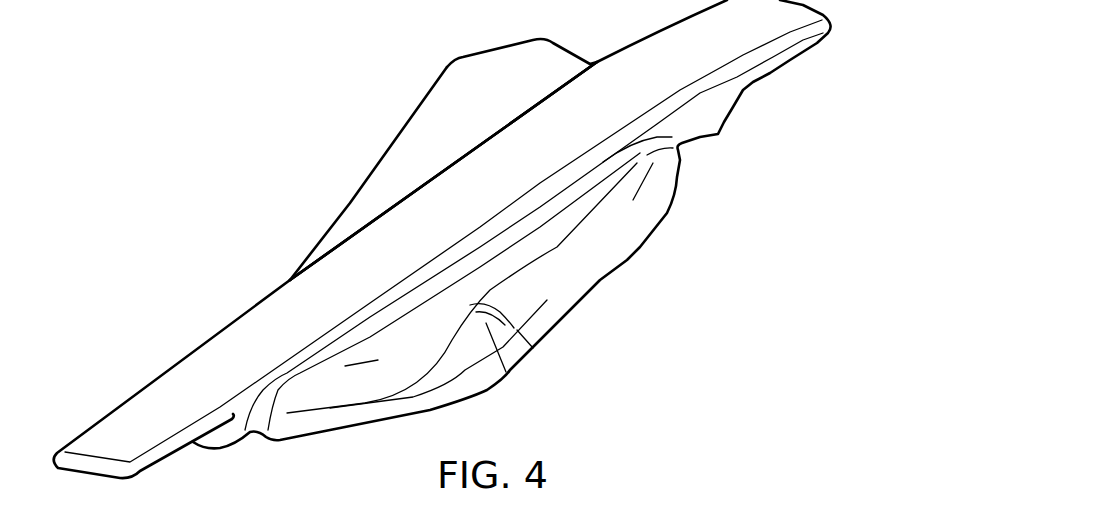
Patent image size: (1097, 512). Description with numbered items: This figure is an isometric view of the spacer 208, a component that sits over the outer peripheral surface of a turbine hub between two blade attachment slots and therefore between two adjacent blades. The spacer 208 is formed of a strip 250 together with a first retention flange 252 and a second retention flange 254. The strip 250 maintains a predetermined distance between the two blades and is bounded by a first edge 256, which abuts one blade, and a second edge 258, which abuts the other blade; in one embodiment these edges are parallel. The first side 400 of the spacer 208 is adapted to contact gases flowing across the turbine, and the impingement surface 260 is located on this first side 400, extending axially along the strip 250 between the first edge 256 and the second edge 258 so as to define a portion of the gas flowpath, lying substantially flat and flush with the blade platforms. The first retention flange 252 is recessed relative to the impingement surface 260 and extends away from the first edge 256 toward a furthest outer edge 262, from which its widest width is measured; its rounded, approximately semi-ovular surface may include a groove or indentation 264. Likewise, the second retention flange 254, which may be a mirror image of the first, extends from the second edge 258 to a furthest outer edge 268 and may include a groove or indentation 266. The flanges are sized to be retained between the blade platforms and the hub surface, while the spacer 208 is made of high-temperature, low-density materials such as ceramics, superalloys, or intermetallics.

The spacer 208 is at (201, 128).
The strip 250 is at (623, 90).
The first retention flange 252 is at (395, 340).
The second retention flange 254 is at (408, 170).
The first edge 256 is at (560, 182).
The second edge 258 is at (253, 305).
The impingement surface 260 is at (182, 391).
The furthest outer edge 262 is at (510, 383).
The groove or indentation 264 is at (502, 330).
The groove or indentation 266 is at (464, 62).
The furthest outer edge 268 is at (409, 118).
The first side 400 is at (515, 160).